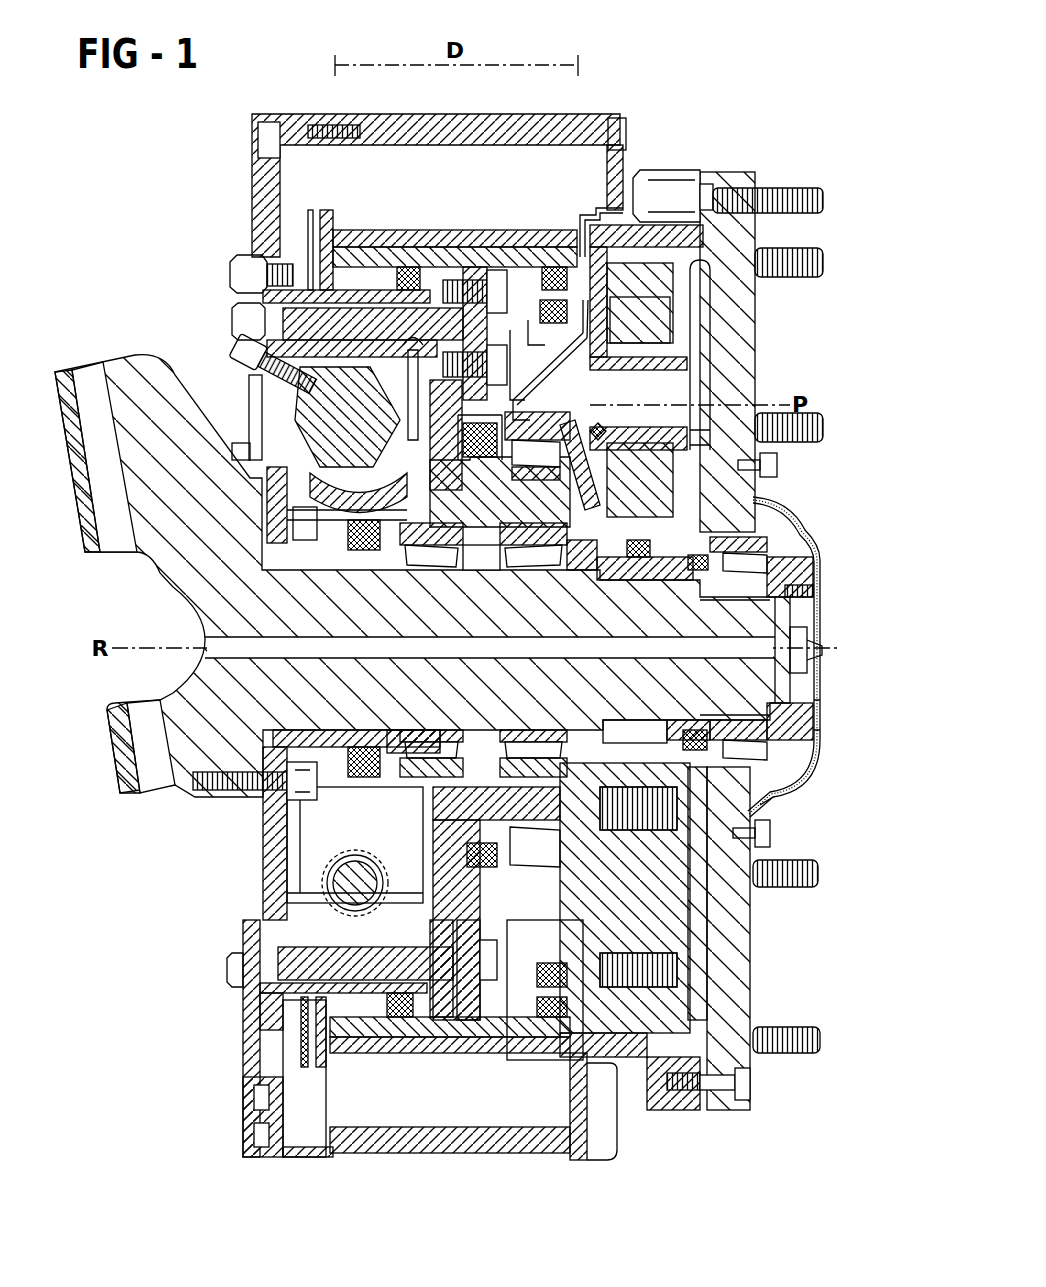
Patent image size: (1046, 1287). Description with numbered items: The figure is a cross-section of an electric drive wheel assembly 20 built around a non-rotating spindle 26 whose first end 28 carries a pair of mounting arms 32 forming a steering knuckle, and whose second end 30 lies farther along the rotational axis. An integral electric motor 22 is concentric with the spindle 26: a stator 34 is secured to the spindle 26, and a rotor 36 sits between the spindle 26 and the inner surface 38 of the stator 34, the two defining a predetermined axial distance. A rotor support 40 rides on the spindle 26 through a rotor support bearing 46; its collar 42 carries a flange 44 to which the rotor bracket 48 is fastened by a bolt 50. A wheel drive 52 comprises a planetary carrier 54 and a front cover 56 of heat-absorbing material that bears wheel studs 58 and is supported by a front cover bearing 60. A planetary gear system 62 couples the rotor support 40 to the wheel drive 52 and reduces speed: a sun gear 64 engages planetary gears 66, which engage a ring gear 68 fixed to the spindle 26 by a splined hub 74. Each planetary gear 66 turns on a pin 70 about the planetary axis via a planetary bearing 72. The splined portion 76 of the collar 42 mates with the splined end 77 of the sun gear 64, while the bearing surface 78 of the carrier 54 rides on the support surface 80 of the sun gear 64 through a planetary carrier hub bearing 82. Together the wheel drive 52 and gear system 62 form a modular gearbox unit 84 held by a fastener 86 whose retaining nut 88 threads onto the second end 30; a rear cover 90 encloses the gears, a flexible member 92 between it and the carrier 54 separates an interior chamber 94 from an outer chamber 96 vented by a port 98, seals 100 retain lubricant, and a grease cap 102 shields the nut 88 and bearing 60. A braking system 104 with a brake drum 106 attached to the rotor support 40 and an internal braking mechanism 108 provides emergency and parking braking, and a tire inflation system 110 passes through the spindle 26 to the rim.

The electric drive wheel assembly 20 is at (678, 66).
The electric motor 22 is at (314, 177).
The spindle 26 is at (165, 578).
The first end 28 is at (172, 592).
The second end 30 is at (808, 592).
The mounting arms 32 is at (75, 470).
The stator 34 is at (590, 175).
The rotor 36 is at (358, 228).
The inner surface 38 is at (520, 317).
The rotor support 40 is at (417, 433).
The collar 42 is at (387, 457).
The flange 44 is at (517, 380).
The rotor support bearing 46 is at (437, 562).
The bracket 48 is at (531, 332).
The bolt 50 is at (490, 268).
The wheel drive 52 is at (787, 469).
The planetary carrier 54 is at (690, 152).
The front cover 56 is at (755, 390).
The wheel studs 58 is at (790, 862).
The front cover bearing 60 is at (790, 535).
The planetary gear system 62 is at (715, 255).
The sun gear 64 is at (768, 558).
The planetary gears 66 is at (700, 322).
The ring gear 68 is at (682, 297).
The pin 70 is at (695, 383).
The planetary bearing 72 is at (707, 447).
The splined hub 74 is at (772, 622).
The splined portion 76 is at (580, 572).
The splined end 77 is at (515, 650).
The bearing surface 78 is at (600, 426).
The support surface 80 is at (608, 500).
The planetary carrier hub bearing 82 is at (400, 396).
The gearbox unit 84 is at (752, 898).
The fastener 86 is at (816, 722).
The retaining nut 88 is at (792, 746).
The rear cover 90 is at (559, 340).
The flexible member 92 is at (576, 235).
The interior chamber 94 is at (538, 386).
The outer chamber 96 is at (585, 320).
The port 98 is at (463, 321).
The seals 100 is at (410, 268).
The grease cap 102 is at (778, 799).
The braking system 104 is at (187, 912).
The brake drum 106 is at (375, 300).
The braking mechanism 108 is at (302, 858).
The tire inflation system 110 is at (828, 649).